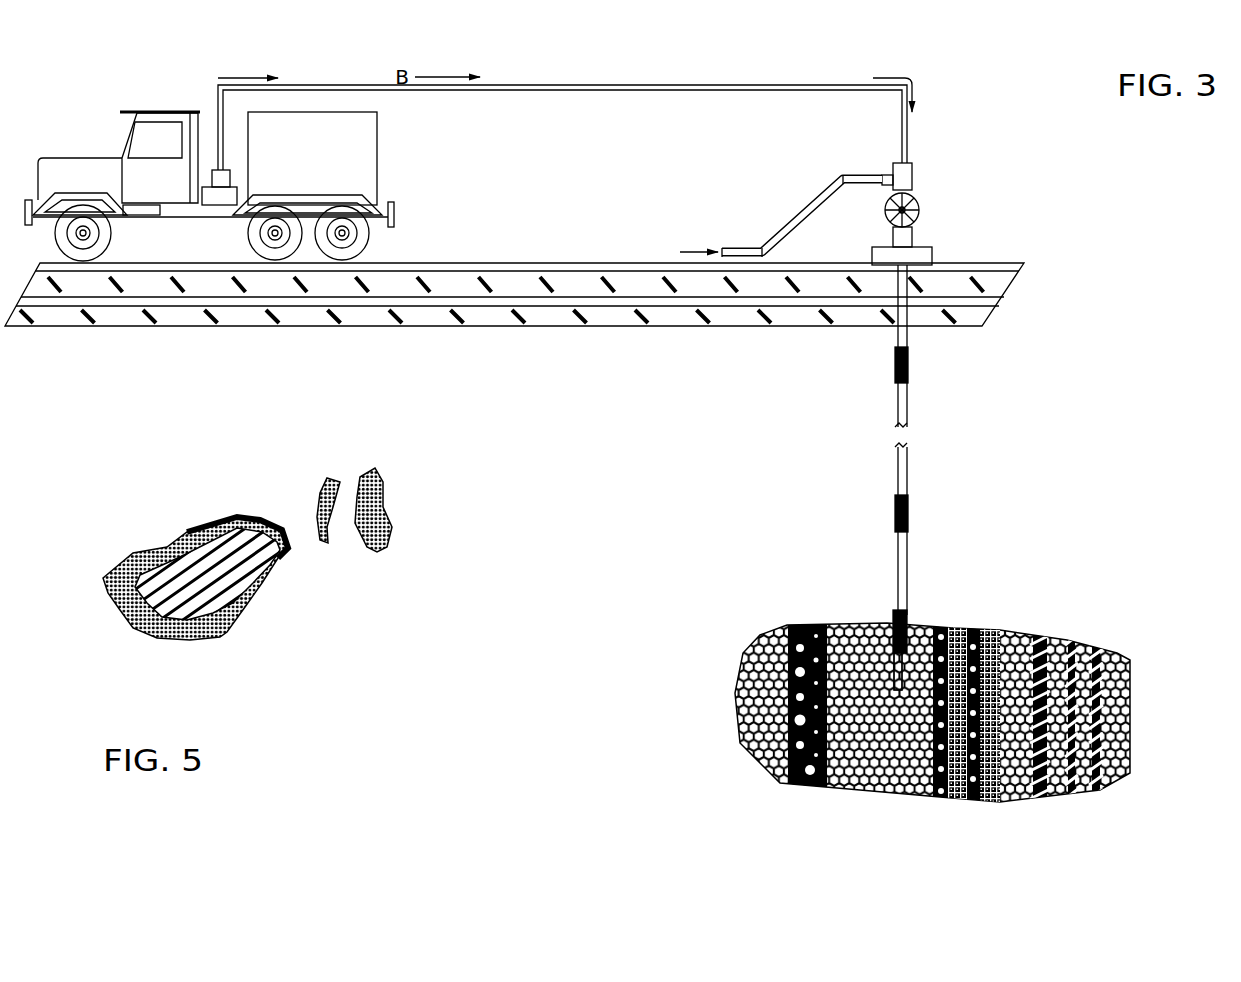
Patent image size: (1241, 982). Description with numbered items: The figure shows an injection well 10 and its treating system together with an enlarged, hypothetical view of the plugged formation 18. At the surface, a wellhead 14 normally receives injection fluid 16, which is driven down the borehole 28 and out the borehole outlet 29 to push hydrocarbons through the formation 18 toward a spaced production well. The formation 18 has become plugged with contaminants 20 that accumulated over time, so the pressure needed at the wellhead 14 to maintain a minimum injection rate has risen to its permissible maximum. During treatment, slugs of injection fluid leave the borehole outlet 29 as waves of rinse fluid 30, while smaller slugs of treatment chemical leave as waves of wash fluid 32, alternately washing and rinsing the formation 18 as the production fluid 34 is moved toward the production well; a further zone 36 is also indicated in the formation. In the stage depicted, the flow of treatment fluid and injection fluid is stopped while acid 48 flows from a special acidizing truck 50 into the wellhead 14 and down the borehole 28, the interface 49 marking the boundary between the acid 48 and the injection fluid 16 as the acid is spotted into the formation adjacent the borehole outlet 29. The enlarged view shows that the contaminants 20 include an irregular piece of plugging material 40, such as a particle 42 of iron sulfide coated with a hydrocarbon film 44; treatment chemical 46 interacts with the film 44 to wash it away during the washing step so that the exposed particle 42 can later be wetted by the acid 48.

In FIG. 3, the injection well 10 is at (865, 473).
In FIG. 3, the wellhead 14 is at (910, 150).
In FIG. 3, the injection fluid 16 is at (790, 218).
In FIG. 3, the formation 18 is at (742, 672).
In FIG. 3, the contaminants 20 is at (945, 625).
In FIG. 3, the borehole 28 is at (848, 590).
In FIG. 3, the borehole outlet 29 is at (897, 690).
In FIG. 3, the waves of injection or rinse fluid 30 is at (942, 797).
In FIG. 3, the waves of wash fluid or treatment chemical 32 is at (963, 623).
In FIG. 3, the production fluid 34 is at (1047, 627).
In FIG. 3, the fissure 36 is at (1087, 792).
In FIG. 5, the piece of plugging material 40 is at (163, 647).
In FIG. 5, the particle 42 is at (185, 535).
In FIG. 5, the hydrocarbon film 44 is at (193, 640).
In FIG. 5, the treatment chemical interacting with the hydrocarbon film 46 is at (213, 637).
In FIG. 3, the acid 48 is at (380, 155).
In FIG. 3, the interface between acid and injection fluid 49 is at (910, 618).
In FIG. 3, the acidizing truck 50 is at (170, 107).